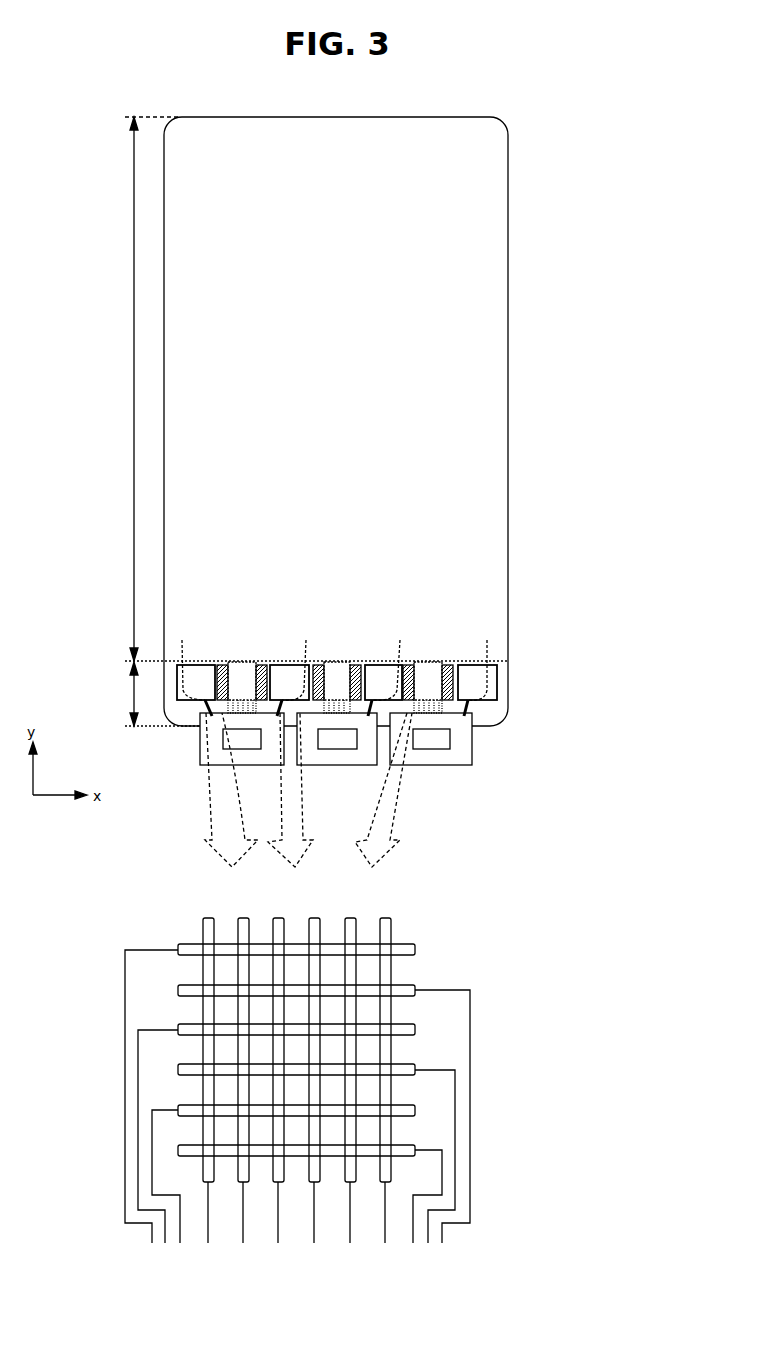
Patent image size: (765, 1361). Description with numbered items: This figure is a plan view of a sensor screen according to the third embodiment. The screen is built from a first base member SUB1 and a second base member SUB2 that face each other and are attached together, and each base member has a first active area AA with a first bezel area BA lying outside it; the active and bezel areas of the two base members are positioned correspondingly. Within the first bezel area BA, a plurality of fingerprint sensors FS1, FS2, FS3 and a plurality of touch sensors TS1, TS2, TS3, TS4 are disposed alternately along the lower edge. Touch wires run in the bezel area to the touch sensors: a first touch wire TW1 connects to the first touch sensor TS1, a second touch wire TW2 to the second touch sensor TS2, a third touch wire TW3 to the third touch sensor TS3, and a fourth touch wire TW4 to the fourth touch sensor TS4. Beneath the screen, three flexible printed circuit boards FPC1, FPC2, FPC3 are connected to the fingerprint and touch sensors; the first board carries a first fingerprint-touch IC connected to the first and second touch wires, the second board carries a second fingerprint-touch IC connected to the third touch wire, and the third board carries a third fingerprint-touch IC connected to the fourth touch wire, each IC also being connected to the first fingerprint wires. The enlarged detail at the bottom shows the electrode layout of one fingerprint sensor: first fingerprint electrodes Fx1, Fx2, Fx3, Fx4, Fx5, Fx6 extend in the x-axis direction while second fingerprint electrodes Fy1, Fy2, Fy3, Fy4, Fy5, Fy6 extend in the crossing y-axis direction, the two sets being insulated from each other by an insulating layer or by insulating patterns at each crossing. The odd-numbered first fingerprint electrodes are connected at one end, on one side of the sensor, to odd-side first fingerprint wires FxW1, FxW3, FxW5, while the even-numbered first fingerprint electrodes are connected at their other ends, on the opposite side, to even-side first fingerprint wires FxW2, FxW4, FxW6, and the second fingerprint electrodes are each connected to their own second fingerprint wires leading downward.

The second base member SUB2 is at (508, 680).
The first base member SUB1 is at (405, 421).
The first active area AA is at (142, 389).
The first bezel area BA is at (306, 693).
The first touch sensor TS1 is at (203, 665).
The second touch sensor TS2 is at (287, 665).
The third touch sensor TS3 is at (381, 665).
The fourth touch sensor TS4 is at (470, 665).
The first fingerprint sensor FS1 is at (244, 662).
The second fingerprint sensor FS2 is at (337, 662).
The third fingerprint sensor FS3 is at (430, 662).
The first touch wire TW1 is at (182, 640).
The second touch wire TW2 is at (306, 640).
The third touch wire TW3 is at (400, 640).
The fourth touch wire TW4 is at (487, 640).
The first flexible printed circuit board FPC1 is at (200, 733).
The second flexible printed circuit board FPC2 is at (297, 766).
The third flexible printed circuit board FPC3 is at (472, 760).
The second fingerprint electrode Fy1 is at (208, 1050).
The second fingerprint electrode Fy2 is at (243, 1050).
The second fingerprint electrode Fy3 is at (278, 1050).
The second fingerprint electrode Fy4 is at (314, 1050).
The second fingerprint electrode Fy5 is at (350, 1050).
The second fingerprint electrode Fy6 is at (392, 910).
The first fingerprint electrode Fx1 is at (400, 945).
The first fingerprint electrode Fx2 is at (400, 986).
The first fingerprint electrode Fx3 is at (400, 1025).
The first fingerprint electrode Fx4 is at (400, 1065).
The first fingerprint electrode Fx5 is at (400, 1106).
The first fingerprint electrode Fx6 is at (400, 1146).
The 1-1 fingerprint wire FxW1 is at (125, 1123).
The 1-2 fingerprint wire FxW2 is at (470, 1121).
The 1-1 fingerprint wire FxW3 is at (138, 1151).
The 1-2 fingerprint wire FxW4 is at (455, 1149).
The 1-1 fingerprint wire FxW5 is at (152, 1178).
The 1-2 fingerprint wire FxW6 is at (442, 1176).